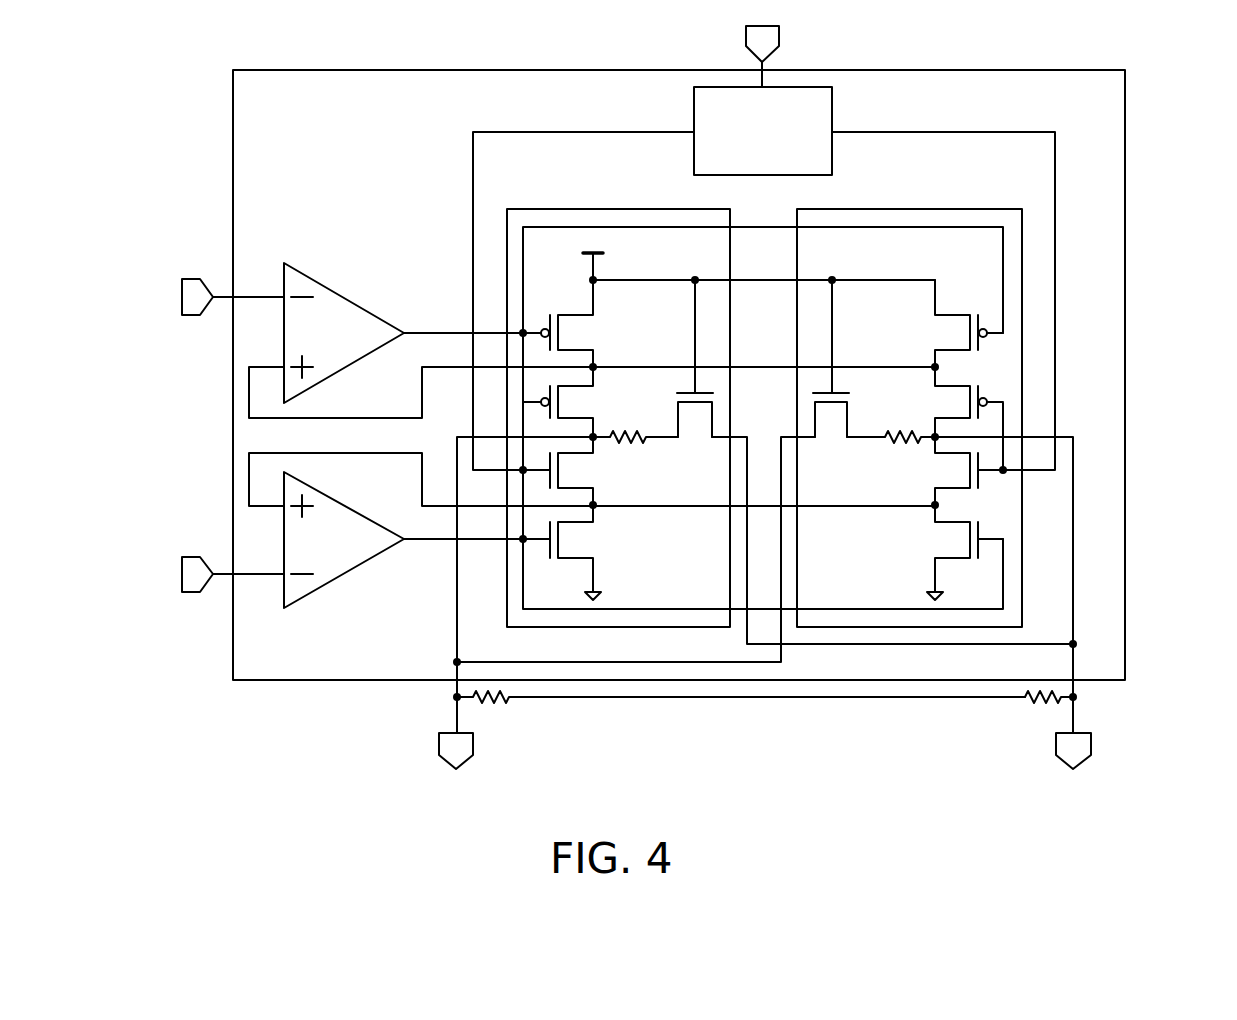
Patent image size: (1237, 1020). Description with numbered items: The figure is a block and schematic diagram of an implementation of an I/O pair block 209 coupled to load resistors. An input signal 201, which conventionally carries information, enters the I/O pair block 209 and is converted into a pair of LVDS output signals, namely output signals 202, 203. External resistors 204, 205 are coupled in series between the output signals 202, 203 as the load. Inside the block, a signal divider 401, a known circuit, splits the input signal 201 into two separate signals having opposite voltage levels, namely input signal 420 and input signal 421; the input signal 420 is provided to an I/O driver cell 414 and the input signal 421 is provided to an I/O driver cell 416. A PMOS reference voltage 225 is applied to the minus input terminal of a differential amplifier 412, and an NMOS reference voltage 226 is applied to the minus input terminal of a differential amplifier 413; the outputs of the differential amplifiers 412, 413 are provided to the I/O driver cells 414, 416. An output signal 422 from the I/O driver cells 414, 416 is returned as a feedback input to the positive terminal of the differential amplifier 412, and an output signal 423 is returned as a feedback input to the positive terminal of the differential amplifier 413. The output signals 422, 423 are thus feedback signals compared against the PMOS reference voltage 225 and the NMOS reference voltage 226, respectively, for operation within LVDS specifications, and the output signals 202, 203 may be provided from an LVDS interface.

The input signal 201 is at (770, 38).
The output signal 202 is at (1151, 782).
The output signal 203 is at (536, 781).
The external resistor 204 is at (1025, 705).
The external resistor 205 is at (505, 703).
The I/O pair block 209 is at (1125, 318).
The PMOS reference voltage 225 is at (182, 300).
The NMOS reference voltage 226 is at (182, 577).
The signal divider 401 is at (744, 168).
The differential amplifier 412 is at (351, 343).
The differential amplifier 413 is at (351, 551).
The I/O driver cell 414 is at (635, 190).
The I/O driver cell 416 is at (924, 190).
The input signal 420 is at (473, 170).
The input signal 421 is at (1055, 170).
The output signal 422 is at (408, 400).
The output signal 423 is at (408, 493).